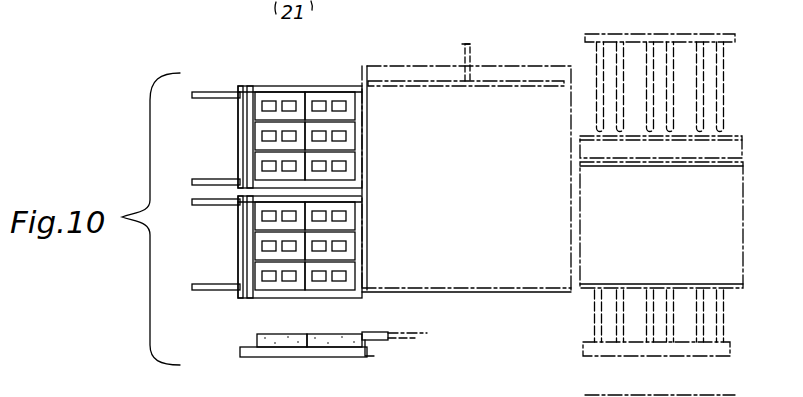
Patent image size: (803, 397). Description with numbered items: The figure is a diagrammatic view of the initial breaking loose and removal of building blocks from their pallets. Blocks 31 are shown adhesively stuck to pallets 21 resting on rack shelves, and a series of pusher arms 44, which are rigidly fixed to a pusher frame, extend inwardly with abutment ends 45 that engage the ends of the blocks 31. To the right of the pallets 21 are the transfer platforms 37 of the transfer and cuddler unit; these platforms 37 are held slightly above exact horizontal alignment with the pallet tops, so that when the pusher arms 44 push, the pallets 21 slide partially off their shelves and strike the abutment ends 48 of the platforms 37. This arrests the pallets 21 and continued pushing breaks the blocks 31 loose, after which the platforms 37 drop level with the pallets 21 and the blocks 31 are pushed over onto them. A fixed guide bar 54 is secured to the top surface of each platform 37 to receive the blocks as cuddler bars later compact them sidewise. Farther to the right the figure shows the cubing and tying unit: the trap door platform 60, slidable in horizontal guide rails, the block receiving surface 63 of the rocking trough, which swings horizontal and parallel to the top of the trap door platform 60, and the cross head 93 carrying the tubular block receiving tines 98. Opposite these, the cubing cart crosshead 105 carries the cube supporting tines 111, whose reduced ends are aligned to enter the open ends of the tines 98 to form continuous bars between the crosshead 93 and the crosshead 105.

The pallets 21 is at (297, 91).
The blocks 31 is at (265, 91).
The transfer platforms 37 is at (471, 206).
The pusher arms 44 is at (204, 99).
The abutment ends 45 is at (251, 159).
The ends of the platforms 48 is at (374, 349).
The fixed guide bar 54 is at (506, 292).
The trap door platform 60 is at (666, 235).
The block receiving surface 63 is at (661, 160).
The cross head 93 is at (700, 34).
The block receiving tines 98 is at (700, 86).
The crosshead 105 is at (643, 366).
The cube supporting tines 111 is at (700, 305).